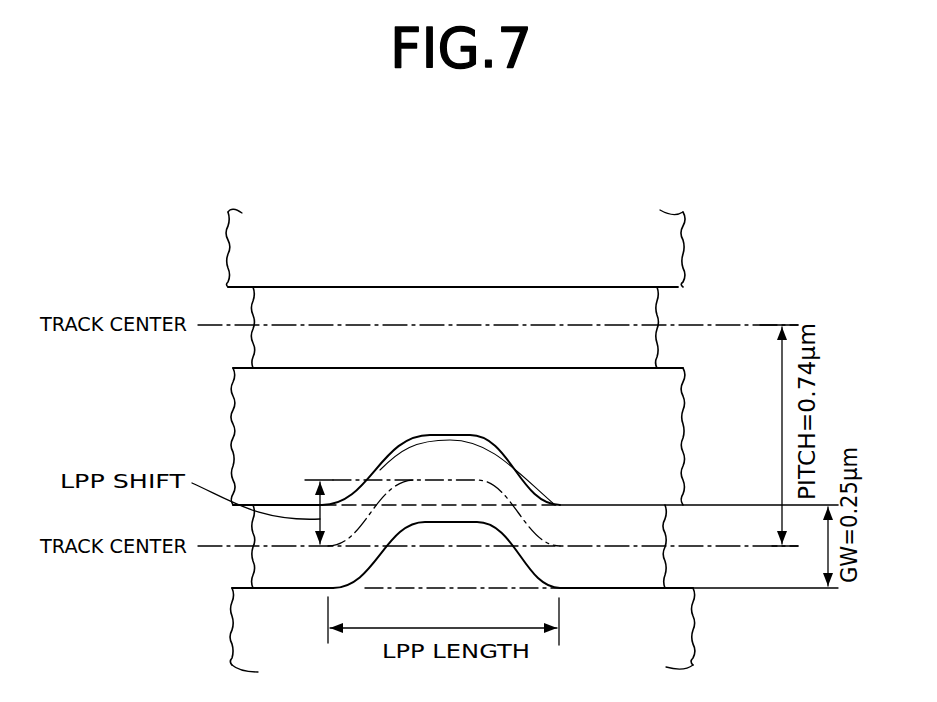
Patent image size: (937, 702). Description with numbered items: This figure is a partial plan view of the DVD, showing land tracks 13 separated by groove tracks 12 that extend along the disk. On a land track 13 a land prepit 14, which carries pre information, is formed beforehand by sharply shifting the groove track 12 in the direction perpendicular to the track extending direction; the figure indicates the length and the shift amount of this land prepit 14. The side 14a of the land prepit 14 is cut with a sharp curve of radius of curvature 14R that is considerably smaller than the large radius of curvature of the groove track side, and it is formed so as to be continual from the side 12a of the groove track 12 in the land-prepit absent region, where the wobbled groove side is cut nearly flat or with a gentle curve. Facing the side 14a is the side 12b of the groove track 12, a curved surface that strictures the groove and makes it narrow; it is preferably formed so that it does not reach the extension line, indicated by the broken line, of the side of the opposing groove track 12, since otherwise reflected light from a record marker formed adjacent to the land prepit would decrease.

The groove track 12 is at (643, 308).
The side of groove track 12a is at (593, 508).
The side of groove track facing land prepit 12b is at (500, 530).
The land track 13 is at (673, 248).
The land prepit 14 is at (443, 452).
The radius of curvature of land prepit 14R is at (450, 527).
The side of land prepit 14a is at (470, 442).